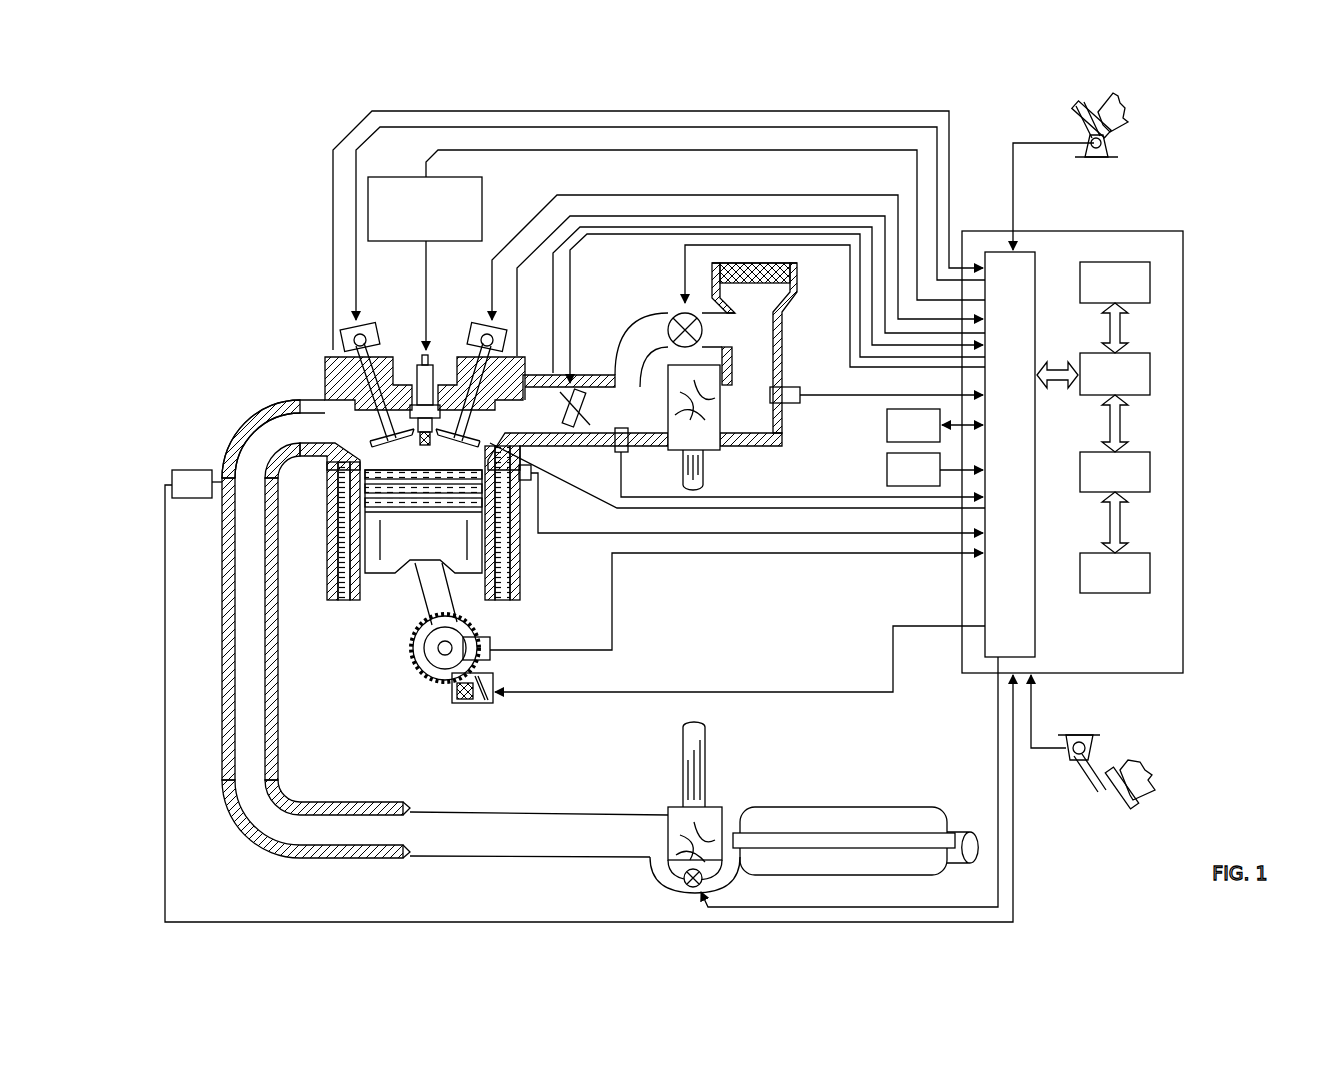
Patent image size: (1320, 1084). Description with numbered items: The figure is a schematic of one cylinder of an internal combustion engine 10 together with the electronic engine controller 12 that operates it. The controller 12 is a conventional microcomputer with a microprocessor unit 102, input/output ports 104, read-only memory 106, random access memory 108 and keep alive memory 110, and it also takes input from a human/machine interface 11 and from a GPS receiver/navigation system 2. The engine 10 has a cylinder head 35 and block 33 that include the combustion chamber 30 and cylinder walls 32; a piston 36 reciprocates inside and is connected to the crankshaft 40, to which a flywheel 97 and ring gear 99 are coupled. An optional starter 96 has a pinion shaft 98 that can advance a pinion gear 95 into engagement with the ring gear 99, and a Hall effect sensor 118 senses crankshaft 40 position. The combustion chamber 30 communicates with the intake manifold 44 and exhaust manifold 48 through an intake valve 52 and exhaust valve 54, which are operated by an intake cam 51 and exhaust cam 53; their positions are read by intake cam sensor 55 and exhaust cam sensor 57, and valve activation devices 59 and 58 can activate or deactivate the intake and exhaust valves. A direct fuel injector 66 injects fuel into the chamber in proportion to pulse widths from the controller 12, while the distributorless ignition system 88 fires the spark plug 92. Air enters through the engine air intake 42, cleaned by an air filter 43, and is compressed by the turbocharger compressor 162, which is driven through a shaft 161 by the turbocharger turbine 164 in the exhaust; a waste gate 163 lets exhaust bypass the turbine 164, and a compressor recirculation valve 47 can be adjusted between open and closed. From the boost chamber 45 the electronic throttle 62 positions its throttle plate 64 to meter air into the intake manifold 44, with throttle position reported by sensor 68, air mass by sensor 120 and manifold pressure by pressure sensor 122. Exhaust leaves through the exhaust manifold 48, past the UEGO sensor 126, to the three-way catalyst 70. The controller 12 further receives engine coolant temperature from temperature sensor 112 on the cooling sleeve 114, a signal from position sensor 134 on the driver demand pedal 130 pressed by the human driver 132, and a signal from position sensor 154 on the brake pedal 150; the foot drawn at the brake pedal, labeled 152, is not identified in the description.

The internal combustion engine 10 is at (262, 312).
The electronic engine controller 12 is at (1183, 231).
The input/output ports 104 is at (1035, 260).
The read-only memory 106 is at (1150, 275).
The microprocessor unit 102 is at (1150, 375).
The random access memory 108 is at (1150, 468).
The keep alive memory 110 is at (1150, 568).
The human/machine interface 11 is at (935, 425).
The GPS receiver/navigation system 2 is at (935, 469).
The distributorless ignition system 88 is at (385, 177).
The cylinder head 35 is at (320, 352).
The block 33 is at (327, 505).
The combustion chamber 30 is at (327, 563).
The cooling sleeve 114 is at (520, 555).
The piston 36 is at (415, 560).
The cylinder walls 32 is at (380, 575).
The crankshaft 40 is at (432, 672).
The flywheel 97 is at (420, 655).
The ring gear 99 is at (440, 690).
The Hall effect sensor 118 is at (490, 640).
The starter 96 is at (493, 700).
The pinion shaft 98 is at (463, 700).
The pinion gear 95 is at (480, 705).
The exhaust valve 54 is at (372, 440).
The exhaust cam sensor 57 is at (350, 330).
The exhaust cam 53 is at (360, 322).
The valve activation device 58 is at (372, 342).
The intake valve 52 is at (470, 432).
The valve activation device 59 is at (483, 345).
The intake cam 51 is at (480, 322).
The intake cam sensor 55 is at (498, 348).
The throttle position sensor 68 is at (527, 384).
The spark plug 92 is at (428, 352).
The exhaust manifold 48 is at (280, 430).
The UEGO sensor 126 is at (172, 478).
The intake manifold 44 is at (522, 422).
The boost chamber 45 is at (615, 422).
The electronic throttle 62 is at (575, 408).
The throttle plate 64 is at (583, 420).
The direct fuel injector 66 is at (530, 472).
The temperature sensor 112 is at (505, 460).
The pressure sensor 122 is at (615, 445).
The engine air intake 42 is at (625, 285).
The air filter 43 is at (760, 283).
The compressor recirculation valve 47 is at (672, 318).
The air mass sensor 120 is at (795, 387).
The turbocharger compressor 162 is at (707, 435).
The shaft 161 is at (683, 470).
The turbocharger turbine 164 is at (668, 807).
The waste gate 163 is at (688, 885).
The three-way catalyst 70 is at (780, 807).
The driver demand pedal 130 is at (1075, 110).
The human driver 132 is at (1128, 105).
The position sensor 134 is at (1105, 145).
The brake pedal 150 is at (1105, 792).
The foot 152 is at (1135, 762).
The position sensor 154 is at (1072, 745).